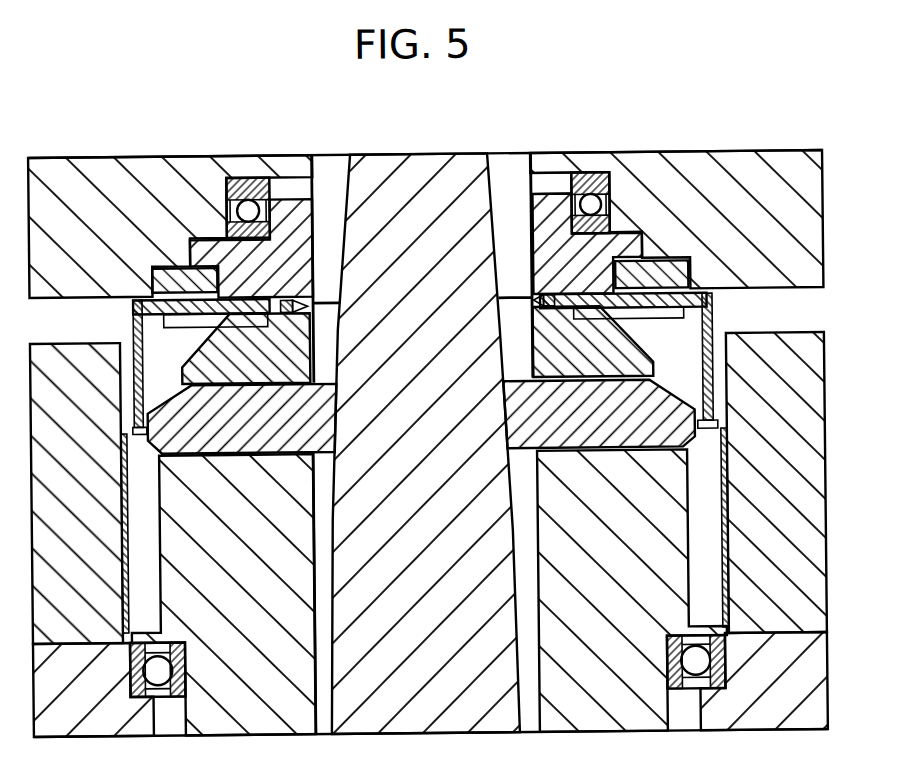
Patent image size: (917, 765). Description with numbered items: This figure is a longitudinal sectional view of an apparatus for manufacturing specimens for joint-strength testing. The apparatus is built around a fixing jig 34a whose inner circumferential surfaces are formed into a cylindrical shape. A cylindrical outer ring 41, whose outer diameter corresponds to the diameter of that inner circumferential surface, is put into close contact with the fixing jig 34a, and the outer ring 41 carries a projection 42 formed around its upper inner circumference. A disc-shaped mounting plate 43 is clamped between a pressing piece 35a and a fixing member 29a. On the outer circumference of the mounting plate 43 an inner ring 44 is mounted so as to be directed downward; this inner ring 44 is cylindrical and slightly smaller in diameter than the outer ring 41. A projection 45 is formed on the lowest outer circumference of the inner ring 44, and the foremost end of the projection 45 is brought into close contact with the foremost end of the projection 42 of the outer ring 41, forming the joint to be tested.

The fixing member 29a is at (636, 341).
The fixing jig 34a is at (828, 524).
The pressing piece 35a is at (533, 176).
The outer ring 41 is at (731, 479).
The projection 42 is at (731, 426).
The mounting plate 43 is at (712, 295).
The inner ring 44 is at (714, 318).
The projection 45 is at (714, 398).